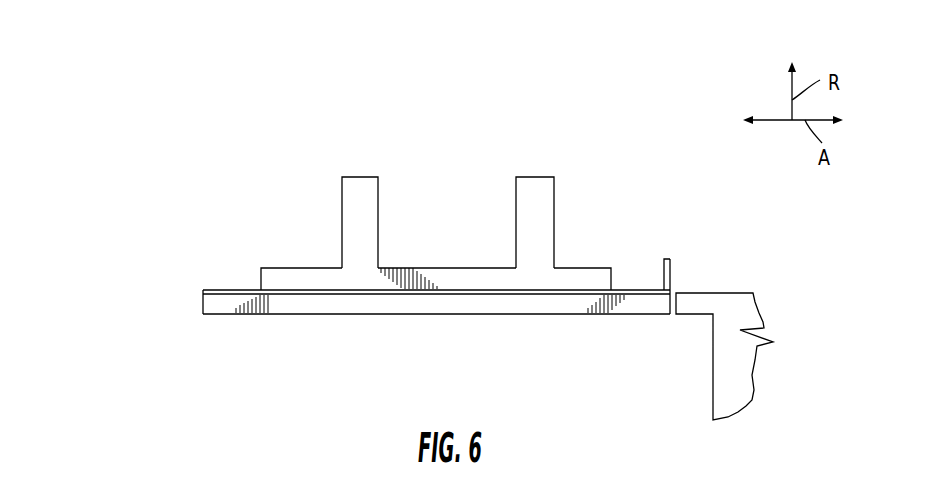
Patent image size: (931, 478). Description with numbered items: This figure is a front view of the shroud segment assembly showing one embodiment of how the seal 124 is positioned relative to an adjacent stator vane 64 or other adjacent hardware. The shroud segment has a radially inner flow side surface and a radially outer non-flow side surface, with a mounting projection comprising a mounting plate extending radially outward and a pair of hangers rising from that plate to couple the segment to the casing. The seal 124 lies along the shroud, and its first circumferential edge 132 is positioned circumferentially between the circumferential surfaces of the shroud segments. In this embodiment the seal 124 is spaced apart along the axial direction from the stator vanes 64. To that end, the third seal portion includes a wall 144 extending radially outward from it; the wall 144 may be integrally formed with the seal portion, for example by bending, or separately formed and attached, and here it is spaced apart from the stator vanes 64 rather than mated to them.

The seal 124 is at (645, 265).
The first circumferential edge 132 is at (453, 291).
The wall 144 is at (672, 268).
The stator vanes 64 is at (745, 362).